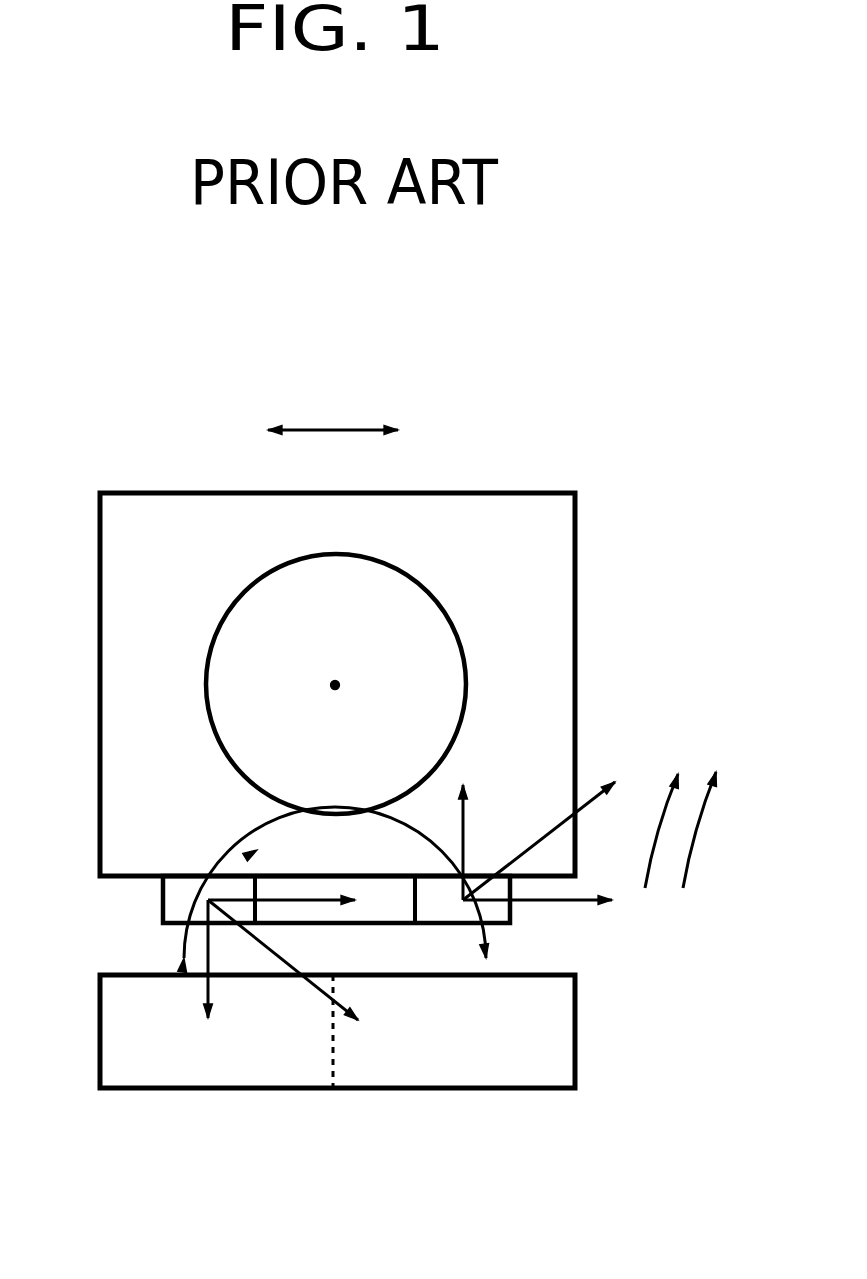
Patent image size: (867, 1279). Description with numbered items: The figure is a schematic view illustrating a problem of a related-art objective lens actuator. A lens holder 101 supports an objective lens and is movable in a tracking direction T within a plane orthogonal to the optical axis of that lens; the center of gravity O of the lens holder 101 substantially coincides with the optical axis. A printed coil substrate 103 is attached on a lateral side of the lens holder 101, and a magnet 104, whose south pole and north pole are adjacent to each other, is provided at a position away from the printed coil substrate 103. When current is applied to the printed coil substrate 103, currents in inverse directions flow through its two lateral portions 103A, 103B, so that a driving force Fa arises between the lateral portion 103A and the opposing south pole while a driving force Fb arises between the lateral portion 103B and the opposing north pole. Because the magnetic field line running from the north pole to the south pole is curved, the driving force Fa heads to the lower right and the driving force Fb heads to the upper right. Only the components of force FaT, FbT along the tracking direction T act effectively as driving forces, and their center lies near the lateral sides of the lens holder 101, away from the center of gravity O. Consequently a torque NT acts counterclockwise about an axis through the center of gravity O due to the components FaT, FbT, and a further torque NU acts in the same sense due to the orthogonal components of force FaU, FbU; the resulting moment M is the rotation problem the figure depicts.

The lens holder 101 is at (556, 669).
The printed coil substrate 103 is at (322, 925).
The lateral portion 103A is at (165, 900).
The lateral portion 103B is at (512, 922).
The magnet 104 is at (432, 1075).
The center of gravity O is at (339, 683).
The tracking direction T is at (333, 408).
The moment M is at (270, 838).
The driving force Fa is at (270, 948).
The component of force FaT is at (312, 897).
The component of force FaU is at (213, 988).
The driving force Fb is at (555, 822).
The component of force FbT is at (583, 888).
The component of force FbU is at (511, 798).
The torque NU is at (662, 843).
The torque NT is at (703, 833).